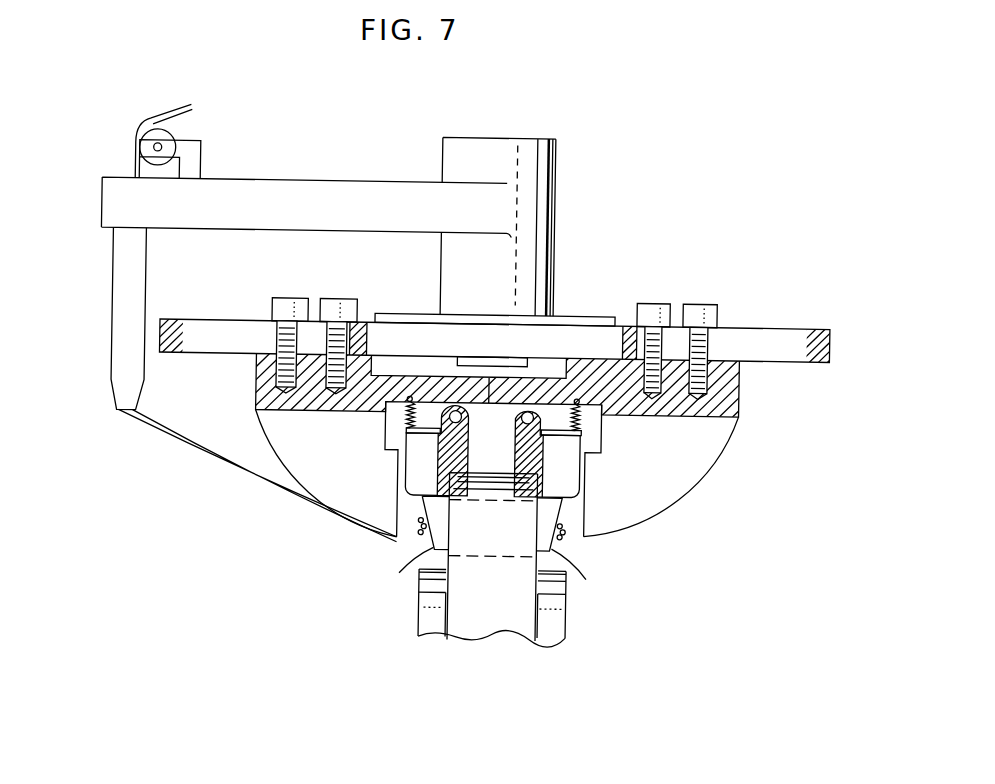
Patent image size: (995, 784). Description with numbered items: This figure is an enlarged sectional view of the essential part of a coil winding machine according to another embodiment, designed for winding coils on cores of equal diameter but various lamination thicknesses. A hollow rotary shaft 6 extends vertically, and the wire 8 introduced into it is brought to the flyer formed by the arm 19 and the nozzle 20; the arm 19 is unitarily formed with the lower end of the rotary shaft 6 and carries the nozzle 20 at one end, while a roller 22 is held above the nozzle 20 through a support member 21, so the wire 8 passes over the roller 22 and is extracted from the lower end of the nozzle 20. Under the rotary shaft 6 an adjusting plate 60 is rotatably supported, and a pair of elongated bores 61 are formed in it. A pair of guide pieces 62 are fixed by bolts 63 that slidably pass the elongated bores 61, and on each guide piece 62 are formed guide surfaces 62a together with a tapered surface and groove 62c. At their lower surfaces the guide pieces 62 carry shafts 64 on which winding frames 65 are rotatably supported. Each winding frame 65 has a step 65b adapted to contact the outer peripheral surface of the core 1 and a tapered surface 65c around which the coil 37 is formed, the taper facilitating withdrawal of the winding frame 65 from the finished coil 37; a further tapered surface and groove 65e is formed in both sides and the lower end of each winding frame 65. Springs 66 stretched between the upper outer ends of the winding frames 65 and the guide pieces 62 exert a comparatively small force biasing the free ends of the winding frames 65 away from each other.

The core 1 is at (525, 630).
The rotary shaft 6 is at (553, 167).
The wire 8 is at (223, 459).
The arm 19 is at (373, 180).
The nozzle 20 is at (112, 283).
The support member 21 is at (198, 152).
The roller 22 is at (140, 140).
The coil 37 is at (567, 527).
The adjusting plate 60 is at (593, 320).
The elongated bores 61 is at (230, 319).
The guide piece 62 is at (492, 468).
The guide surface 62a is at (287, 465).
The tapered surface and groove 62c is at (342, 510).
The bolts 63 is at (335, 294).
The shaft 64 is at (507, 440).
The winding frame 65 is at (490, 522).
The step 65b is at (460, 469).
The tapered surface 65c is at (430, 499).
The tapered surface and groove 65e is at (402, 567).
The springs 66 is at (410, 401).